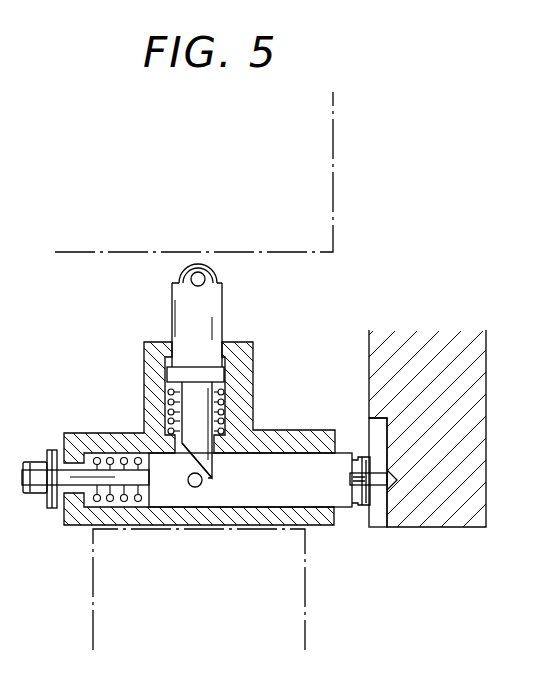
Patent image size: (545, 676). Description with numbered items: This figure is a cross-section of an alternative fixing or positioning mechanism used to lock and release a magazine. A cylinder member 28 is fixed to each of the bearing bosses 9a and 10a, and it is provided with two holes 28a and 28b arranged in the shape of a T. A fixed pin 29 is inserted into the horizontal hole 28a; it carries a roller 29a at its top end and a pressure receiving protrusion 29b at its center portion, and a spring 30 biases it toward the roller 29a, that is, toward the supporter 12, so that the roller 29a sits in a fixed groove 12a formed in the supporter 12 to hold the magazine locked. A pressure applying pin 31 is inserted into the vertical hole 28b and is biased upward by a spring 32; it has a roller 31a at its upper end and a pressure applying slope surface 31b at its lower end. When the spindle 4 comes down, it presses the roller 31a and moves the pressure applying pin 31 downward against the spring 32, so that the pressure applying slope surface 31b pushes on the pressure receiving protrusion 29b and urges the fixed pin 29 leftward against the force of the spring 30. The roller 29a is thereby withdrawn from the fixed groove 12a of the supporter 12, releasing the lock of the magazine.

The spindle 4 is at (333, 207).
The bearing boss 9a is at (273, 589).
The bearing boss 10a is at (305, 617).
The supporter 12 is at (487, 380).
The fixed groove 12a is at (378, 527).
The cylinder member 28 is at (199, 456).
The hole 28a is at (222, 526).
The hole 28b is at (229, 412).
The fixed pin 29 is at (315, 529).
The roller 29a is at (390, 482).
The pressure receiving protrusion 29b is at (193, 488).
The spring 30 is at (90, 524).
The pressure applying pin 31 is at (188, 353).
The roller 31a is at (219, 273).
The pressure applying slope surface 31b is at (213, 455).
The spring 32 is at (222, 392).